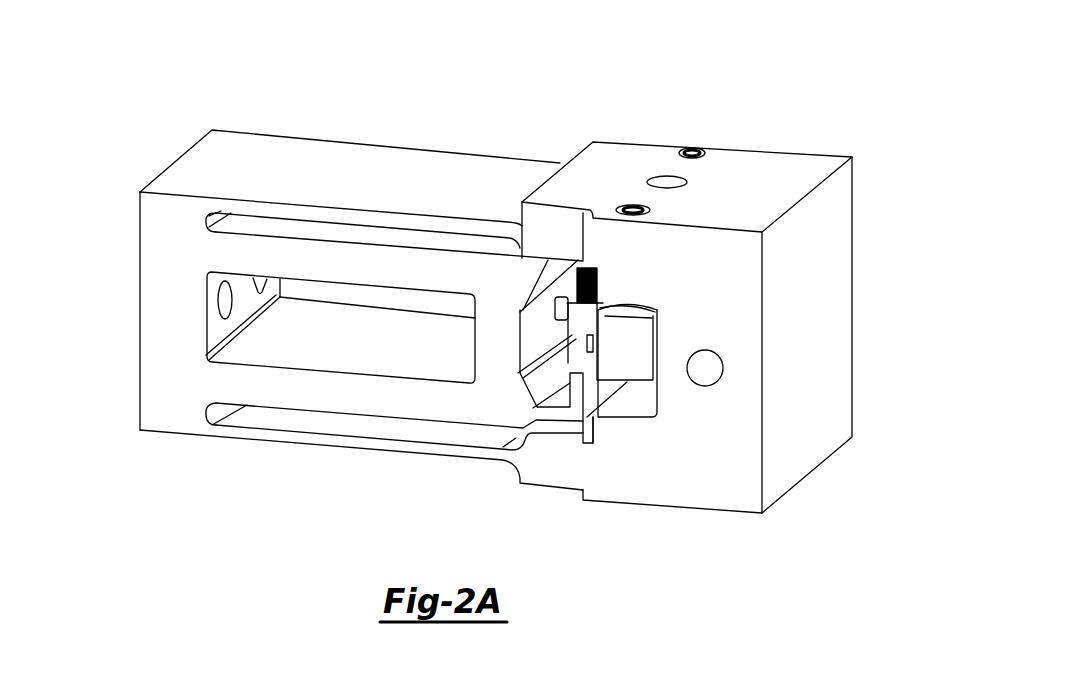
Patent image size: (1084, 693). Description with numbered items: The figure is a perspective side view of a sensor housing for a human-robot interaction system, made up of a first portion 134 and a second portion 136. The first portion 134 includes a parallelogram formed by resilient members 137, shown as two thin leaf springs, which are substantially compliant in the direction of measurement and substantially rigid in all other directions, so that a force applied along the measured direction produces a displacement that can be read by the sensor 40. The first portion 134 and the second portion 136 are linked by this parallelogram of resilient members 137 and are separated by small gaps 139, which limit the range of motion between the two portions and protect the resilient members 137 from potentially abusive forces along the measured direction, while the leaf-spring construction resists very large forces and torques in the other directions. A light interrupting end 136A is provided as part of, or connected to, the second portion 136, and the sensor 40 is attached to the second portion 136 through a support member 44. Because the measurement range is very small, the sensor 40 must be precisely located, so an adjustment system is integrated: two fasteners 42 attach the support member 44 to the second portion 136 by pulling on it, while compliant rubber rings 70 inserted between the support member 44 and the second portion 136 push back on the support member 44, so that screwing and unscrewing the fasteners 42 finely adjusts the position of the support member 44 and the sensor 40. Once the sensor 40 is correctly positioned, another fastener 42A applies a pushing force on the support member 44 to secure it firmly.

The first portion 134 is at (158, 286).
The second portion 136 is at (818, 330).
The light interrupting end 136A is at (600, 390).
The resilient member 137 is at (308, 175).
The gaps 139 is at (527, 258).
The sensor 40 is at (542, 338).
The fasteners 42 is at (652, 212).
The fastener 42A is at (668, 182).
The support member 44 is at (633, 357).
The compliant rubber rings 70 is at (657, 310).